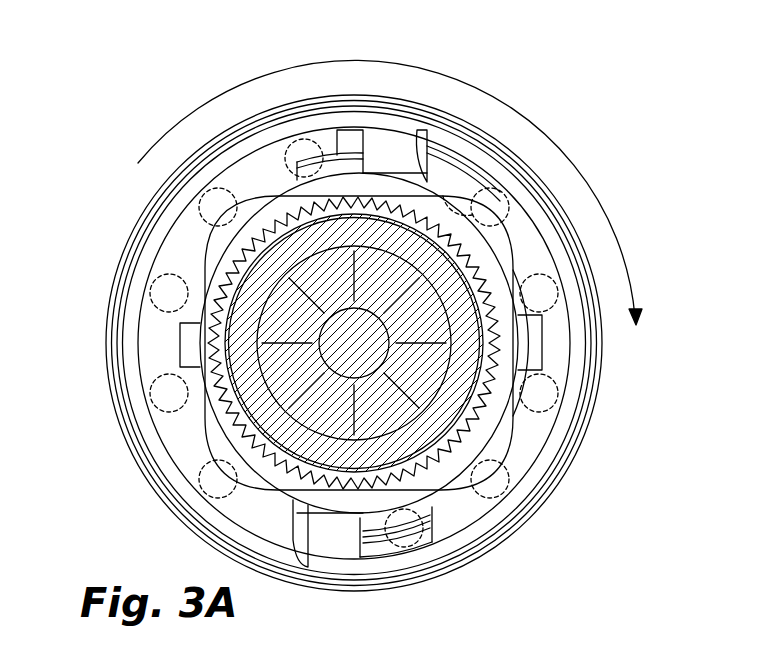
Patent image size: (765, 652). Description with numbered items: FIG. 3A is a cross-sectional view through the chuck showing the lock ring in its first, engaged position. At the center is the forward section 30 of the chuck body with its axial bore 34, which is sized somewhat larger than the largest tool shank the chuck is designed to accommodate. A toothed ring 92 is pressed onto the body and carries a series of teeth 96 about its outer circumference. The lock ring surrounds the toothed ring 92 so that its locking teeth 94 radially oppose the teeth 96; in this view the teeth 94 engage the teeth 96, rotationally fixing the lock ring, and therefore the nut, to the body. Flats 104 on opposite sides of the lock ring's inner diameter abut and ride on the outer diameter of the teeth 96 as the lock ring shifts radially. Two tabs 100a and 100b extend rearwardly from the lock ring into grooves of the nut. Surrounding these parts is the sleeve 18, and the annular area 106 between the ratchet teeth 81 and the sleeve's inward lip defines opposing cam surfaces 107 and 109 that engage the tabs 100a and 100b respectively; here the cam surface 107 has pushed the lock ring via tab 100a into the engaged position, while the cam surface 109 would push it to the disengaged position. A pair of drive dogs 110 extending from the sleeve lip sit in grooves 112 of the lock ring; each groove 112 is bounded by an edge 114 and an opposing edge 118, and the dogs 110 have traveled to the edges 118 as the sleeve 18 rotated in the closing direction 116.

The sleeve 18 is at (603, 402).
The forward section 30 is at (462, 448).
The axial bore 34 is at (323, 248).
The ratchet teeth 81 is at (143, 313).
The toothed ring 92 is at (432, 436).
The locking teeth 94 is at (212, 405).
The teeth 96 is at (232, 272).
The tab 100a is at (178, 360).
The tab 100b is at (548, 297).
The flats 104 is at (480, 210).
The annular area 106 is at (525, 253).
The cam surface 107 is at (173, 280).
The cam surface 109 is at (527, 397).
The drive dogs 110 is at (356, 128).
The grooves 112 is at (340, 150).
The edge 114 is at (312, 153).
The closing direction 116 is at (188, 118).
The opposing edges 118 is at (418, 172).